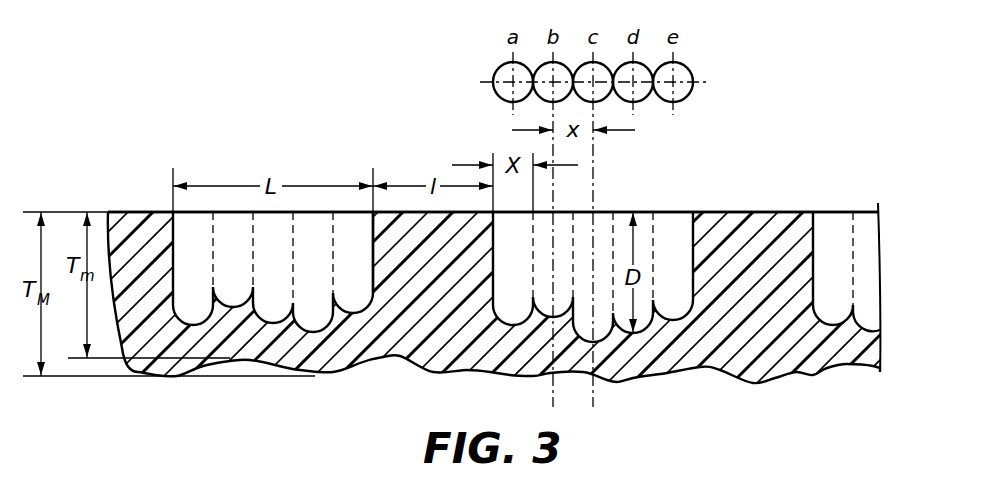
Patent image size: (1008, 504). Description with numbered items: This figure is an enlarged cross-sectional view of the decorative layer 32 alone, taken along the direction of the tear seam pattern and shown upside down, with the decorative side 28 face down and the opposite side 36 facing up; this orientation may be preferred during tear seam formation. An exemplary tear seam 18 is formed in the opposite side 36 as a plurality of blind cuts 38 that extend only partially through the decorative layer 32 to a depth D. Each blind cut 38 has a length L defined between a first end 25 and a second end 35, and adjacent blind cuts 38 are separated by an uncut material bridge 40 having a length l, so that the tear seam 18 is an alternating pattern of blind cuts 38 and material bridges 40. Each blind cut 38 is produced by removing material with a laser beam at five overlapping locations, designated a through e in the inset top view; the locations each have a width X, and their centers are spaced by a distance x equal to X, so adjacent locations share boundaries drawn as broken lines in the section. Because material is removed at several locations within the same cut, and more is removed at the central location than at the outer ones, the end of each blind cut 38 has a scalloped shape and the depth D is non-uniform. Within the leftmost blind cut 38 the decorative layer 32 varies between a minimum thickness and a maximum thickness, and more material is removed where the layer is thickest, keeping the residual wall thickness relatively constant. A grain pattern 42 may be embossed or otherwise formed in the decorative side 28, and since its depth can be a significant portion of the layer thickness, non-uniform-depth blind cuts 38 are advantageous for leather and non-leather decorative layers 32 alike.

The tear seam 18 is at (688, 206).
The first end 25 is at (172, 228).
The decorative side 28 is at (397, 358).
The decorative layer 32 is at (121, 212).
The second end 35 is at (373, 227).
The opposite side 36 is at (151, 212).
The blind cut 38 is at (647, 223).
The material bridge 40 is at (797, 226).
The grain pattern 42 is at (490, 372).